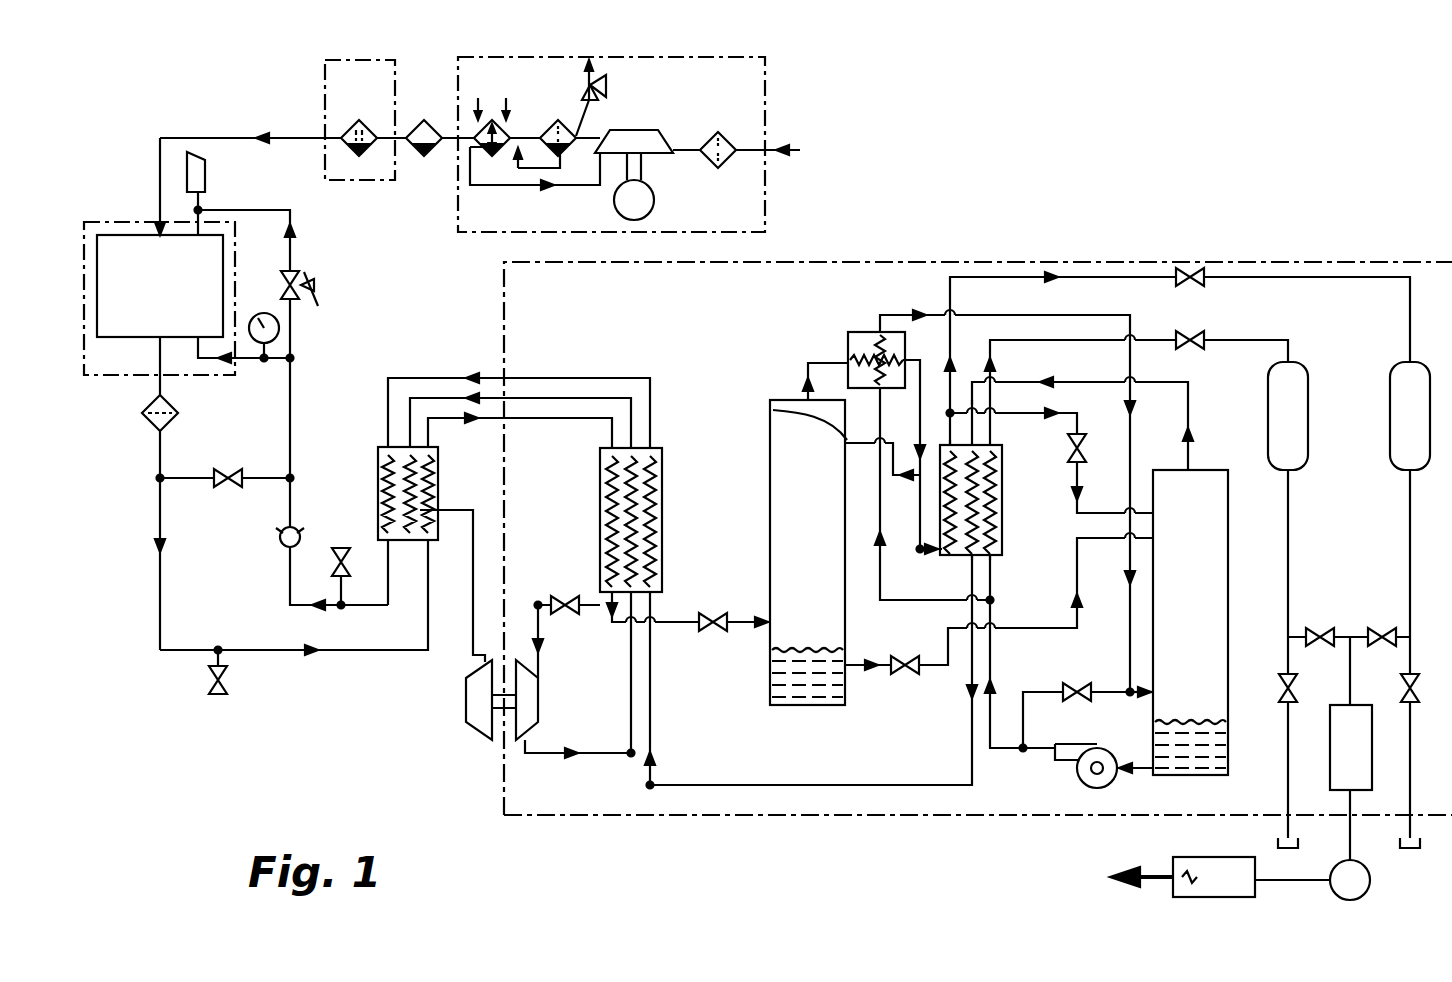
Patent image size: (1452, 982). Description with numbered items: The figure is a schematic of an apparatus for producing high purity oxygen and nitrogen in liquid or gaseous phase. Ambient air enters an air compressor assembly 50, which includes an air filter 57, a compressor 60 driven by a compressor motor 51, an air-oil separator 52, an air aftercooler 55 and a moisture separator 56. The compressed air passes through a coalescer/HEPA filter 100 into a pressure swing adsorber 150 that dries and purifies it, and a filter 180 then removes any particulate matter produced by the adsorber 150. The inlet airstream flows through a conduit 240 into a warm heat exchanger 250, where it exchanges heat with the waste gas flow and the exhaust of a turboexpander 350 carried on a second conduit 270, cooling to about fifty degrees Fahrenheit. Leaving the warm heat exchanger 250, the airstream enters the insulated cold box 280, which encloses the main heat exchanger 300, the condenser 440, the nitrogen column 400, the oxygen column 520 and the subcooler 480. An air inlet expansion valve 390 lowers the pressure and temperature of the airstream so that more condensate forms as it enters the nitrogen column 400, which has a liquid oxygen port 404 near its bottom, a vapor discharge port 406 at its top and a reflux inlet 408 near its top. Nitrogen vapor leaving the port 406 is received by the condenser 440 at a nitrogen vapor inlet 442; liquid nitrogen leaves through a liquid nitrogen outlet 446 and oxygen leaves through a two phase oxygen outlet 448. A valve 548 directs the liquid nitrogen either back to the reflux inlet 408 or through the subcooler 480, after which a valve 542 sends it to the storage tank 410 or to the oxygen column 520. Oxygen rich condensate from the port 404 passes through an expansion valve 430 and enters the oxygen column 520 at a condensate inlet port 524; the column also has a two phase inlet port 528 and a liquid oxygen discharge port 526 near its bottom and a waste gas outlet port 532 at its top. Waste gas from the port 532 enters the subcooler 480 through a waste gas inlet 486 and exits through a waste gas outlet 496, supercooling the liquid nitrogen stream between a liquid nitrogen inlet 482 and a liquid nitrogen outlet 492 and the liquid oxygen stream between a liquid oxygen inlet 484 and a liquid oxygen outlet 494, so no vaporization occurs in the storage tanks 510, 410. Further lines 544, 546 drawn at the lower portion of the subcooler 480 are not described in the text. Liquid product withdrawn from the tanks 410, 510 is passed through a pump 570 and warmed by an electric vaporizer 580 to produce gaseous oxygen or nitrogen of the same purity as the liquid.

The coalescer/HEPA filter 100 is at (320, 96).
The moisture separator 56 is at (416, 125).
The air aftercooler 55 is at (506, 124).
The air-oil separator 52 is at (576, 142).
The compressor 60 is at (628, 130).
The air filter 57 is at (723, 138).
The air compressor assembly 50 is at (775, 97).
The compressor motor 51 is at (655, 197).
The pressure swing adsorber 150 is at (118, 226).
The filter 180 is at (172, 406).
The conduit 240 is at (388, 652).
The warm heat exchanger 250 is at (378, 478).
The return conduit 270 is at (522, 396).
The main heat exchanger 300 is at (662, 470).
The turboexpander 350 is at (474, 724).
The air inlet expansion valve 390 is at (727, 628).
The nitrogen column 400 is at (768, 546).
The liquid oxygen port 404 is at (848, 662).
The reflux inlet 408 is at (768, 406).
The vapor discharge port 406 is at (805, 395).
The expansion valve 430 is at (915, 668).
The condenser 440 is at (859, 335).
The nitrogen vapor inlet 442 is at (850, 360).
The liquid nitrogen outlet 446 is at (906, 362).
The two phase oxygen outlet 448 is at (882, 333).
The subcooler 480 is at (1000, 518).
The liquid nitrogen inlet 482 is at (940, 554).
The liquid oxygen inlet 484 is at (1001, 568).
The waste gas inlet 486 is at (974, 433).
The liquid nitrogen outlet 492 is at (948, 442).
The liquid oxygen outlet 494 is at (992, 446).
The waste gas outlet 496 is at (972, 562).
The storage tank 510 is at (1296, 371).
The oxygen column 520 is at (1152, 512).
The condensate inlet port 524 is at (1150, 524).
The liquid oxygen discharge port 526 is at (1153, 776).
The two phase inlet port 528 is at (1148, 690).
The waste gas outlet port 532 is at (1192, 468).
The valve 542 is at (953, 402).
The conduit 544 is at (994, 601).
The conduit 546 is at (1022, 752).
The valve 548 is at (919, 480).
The pump 570 is at (1370, 880).
The electric vaporizer 580 is at (1202, 858).
The storage tank 410 is at (1413, 371).
The cold box 280 is at (1294, 262).